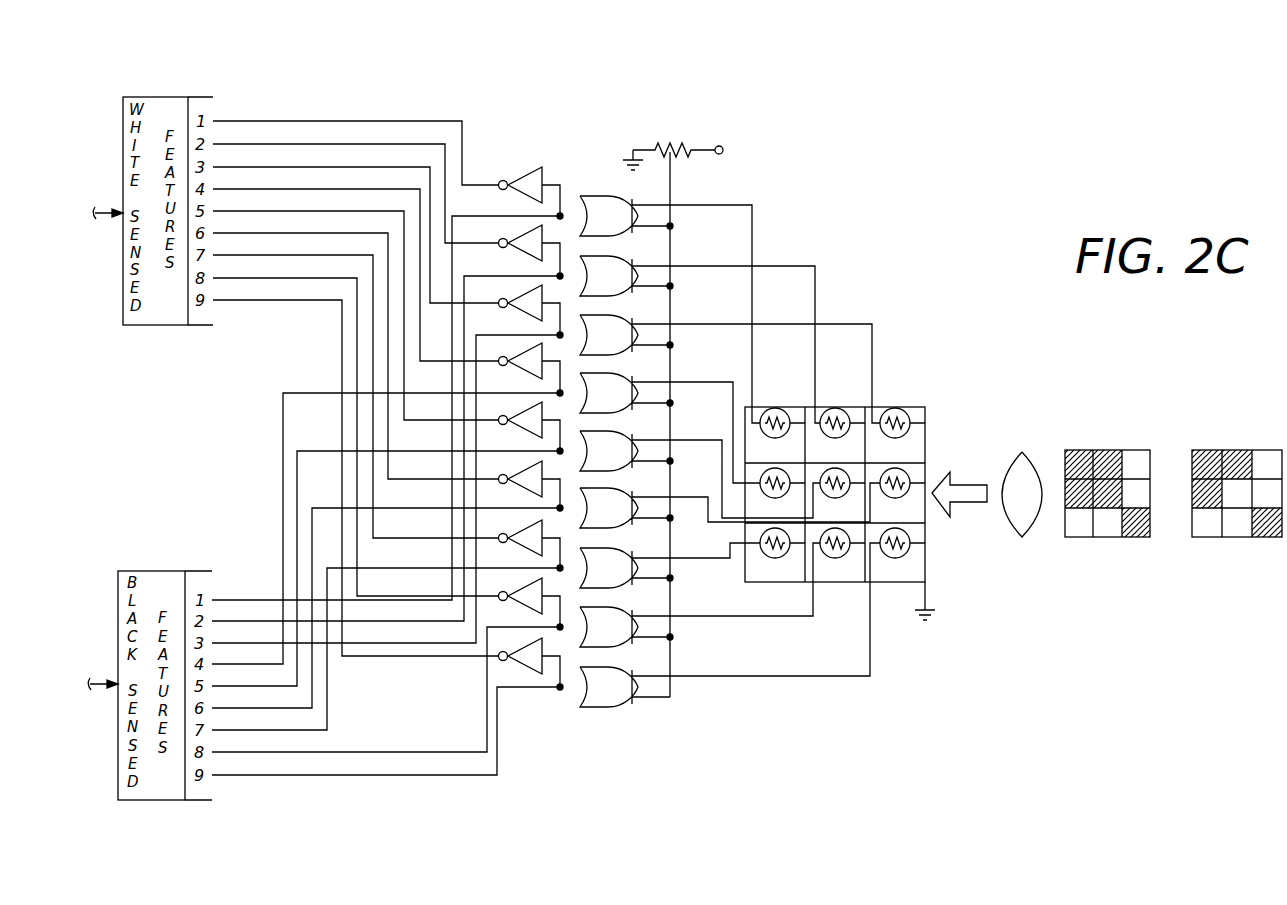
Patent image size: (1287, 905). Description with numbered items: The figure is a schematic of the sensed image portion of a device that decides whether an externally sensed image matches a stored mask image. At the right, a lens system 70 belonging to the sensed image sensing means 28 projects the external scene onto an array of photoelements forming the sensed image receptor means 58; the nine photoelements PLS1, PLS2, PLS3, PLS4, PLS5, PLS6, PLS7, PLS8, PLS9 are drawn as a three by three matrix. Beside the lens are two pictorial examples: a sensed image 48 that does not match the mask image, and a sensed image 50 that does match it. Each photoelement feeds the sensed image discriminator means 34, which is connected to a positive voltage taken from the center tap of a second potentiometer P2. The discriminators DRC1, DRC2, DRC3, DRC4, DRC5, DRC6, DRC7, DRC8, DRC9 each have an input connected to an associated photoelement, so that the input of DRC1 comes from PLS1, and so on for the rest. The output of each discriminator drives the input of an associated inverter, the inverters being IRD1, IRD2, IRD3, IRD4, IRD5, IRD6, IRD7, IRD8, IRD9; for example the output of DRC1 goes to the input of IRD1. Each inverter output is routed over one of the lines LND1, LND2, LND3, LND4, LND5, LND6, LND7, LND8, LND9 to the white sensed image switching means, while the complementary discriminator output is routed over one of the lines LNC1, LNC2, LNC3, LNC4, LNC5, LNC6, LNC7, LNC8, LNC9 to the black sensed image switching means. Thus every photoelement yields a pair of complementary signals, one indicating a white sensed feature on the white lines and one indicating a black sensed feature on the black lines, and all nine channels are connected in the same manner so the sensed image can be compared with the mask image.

The sensed image discriminator means 34 is at (578, 119).
The sensed image sensing means 28 is at (1012, 349).
The sensed image receptor means 58 is at (930, 404).
The lens system 70 is at (1035, 458).
The image which does not match the mask image 48 is at (1095, 450).
The image which matches the mask image 50 is at (1262, 450).
The second potentiometer P2 is at (668, 145).
The line LND1 is at (230, 121).
The line LND2 is at (255, 144).
The line LND3 is at (280, 167).
The line LND4 is at (355, 189).
The line LND5 is at (367, 211).
The line LND6 is at (383, 233).
The line LND7 is at (255, 257).
The line LND8 is at (270, 278).
The line LND9 is at (340, 332).
The line LNC1 is at (253, 599).
The line LNC2 is at (235, 620).
The line LNC3 is at (263, 644).
The line LNC4 is at (248, 665).
The line LNC5 is at (240, 686).
The line LNC6 is at (233, 709).
The line LNC7 is at (221, 733).
The line LNC8 is at (368, 755).
The line LNC9 is at (473, 778).
The inverter IRD1 is at (528, 172).
The inverter IRD2 is at (522, 235).
The inverter IRD3 is at (535, 292).
The inverter IRD4 is at (537, 348).
The inverter IRD5 is at (543, 410).
The inverter IRD6 is at (543, 468).
The inverter IRD7 is at (543, 526).
The inverter IRD8 is at (543, 587).
The inverter IRD9 is at (543, 647).
The discriminator DRC1 is at (628, 196).
The discriminator DRC2 is at (637, 257).
The discriminator DRC3 is at (637, 319).
The discriminator DRC4 is at (637, 378).
The discriminator DRC5 is at (637, 437).
The discriminator DRC6 is at (637, 530).
The discriminator DRC7 is at (667, 588).
The discriminator DRC8 is at (668, 634).
The discriminator DRC9 is at (582, 698).
The photoelement PLS1 is at (790, 408).
The photoelement PLS2 is at (853, 408).
The photoelement PLS3 is at (883, 408).
The photoelement PLS4 is at (763, 507).
The photoelement PLS5 is at (857, 475).
The photoelement PLS6 is at (915, 472).
The photoelement PLS7 is at (785, 573).
The photoelement PLS8 is at (847, 573).
The photoelement PLS9 is at (903, 573).